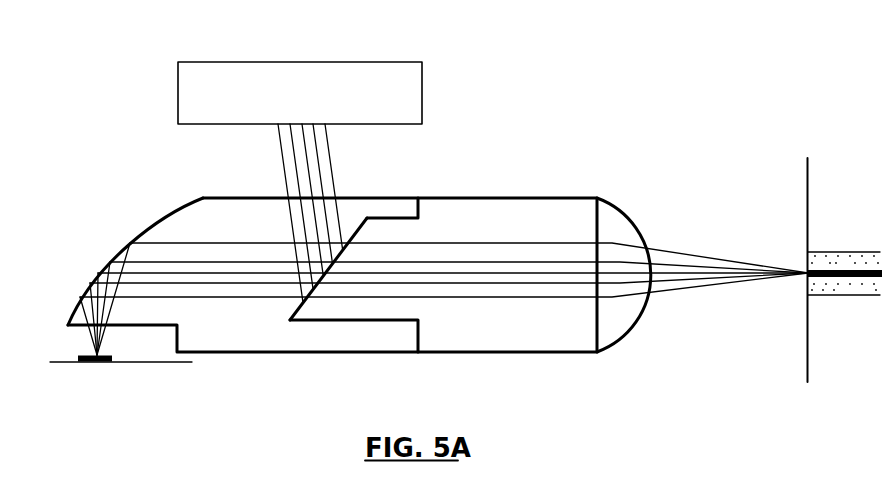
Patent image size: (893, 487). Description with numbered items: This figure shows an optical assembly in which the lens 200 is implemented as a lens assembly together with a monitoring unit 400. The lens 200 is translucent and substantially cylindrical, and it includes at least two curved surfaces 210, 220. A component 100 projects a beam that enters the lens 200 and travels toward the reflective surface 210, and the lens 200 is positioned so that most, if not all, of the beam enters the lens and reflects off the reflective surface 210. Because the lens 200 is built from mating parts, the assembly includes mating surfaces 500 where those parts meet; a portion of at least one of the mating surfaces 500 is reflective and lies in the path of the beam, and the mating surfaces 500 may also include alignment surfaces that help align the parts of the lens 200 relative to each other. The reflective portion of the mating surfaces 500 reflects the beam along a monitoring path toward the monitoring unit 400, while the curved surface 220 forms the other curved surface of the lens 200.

The component 100 is at (92, 360).
The lens 200 is at (472, 198).
The reflective surface 210 is at (172, 216).
The curved surface 220 is at (628, 215).
The monitoring unit 400 is at (375, 62).
The mating surfaces 500 is at (298, 308).